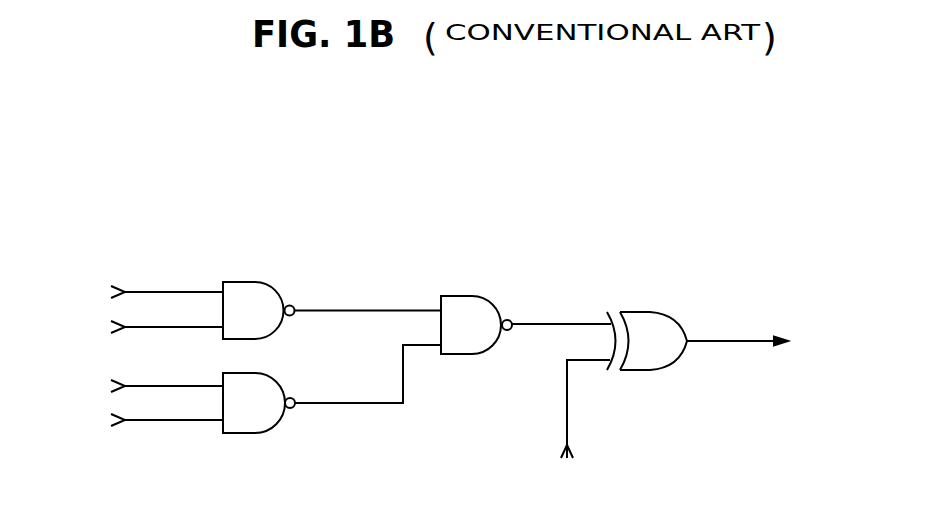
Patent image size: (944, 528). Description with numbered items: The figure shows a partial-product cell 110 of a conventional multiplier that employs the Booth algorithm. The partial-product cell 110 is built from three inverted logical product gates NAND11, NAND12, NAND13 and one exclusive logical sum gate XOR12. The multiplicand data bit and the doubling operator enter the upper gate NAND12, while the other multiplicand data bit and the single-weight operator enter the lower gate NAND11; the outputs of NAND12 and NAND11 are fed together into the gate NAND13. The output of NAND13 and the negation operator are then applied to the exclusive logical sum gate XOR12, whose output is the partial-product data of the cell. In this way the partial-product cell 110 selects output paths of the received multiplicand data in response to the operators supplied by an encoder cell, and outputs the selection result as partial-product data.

The partial-product cell 110 is at (456, 316).
The inverted logical product gate NAND11 is at (257, 372).
The inverted logical product gate NAND12 is at (257, 280).
The inverted logical product gate NAND13 is at (472, 297).
The exclusive logical sum gate XOR12 is at (647, 310).